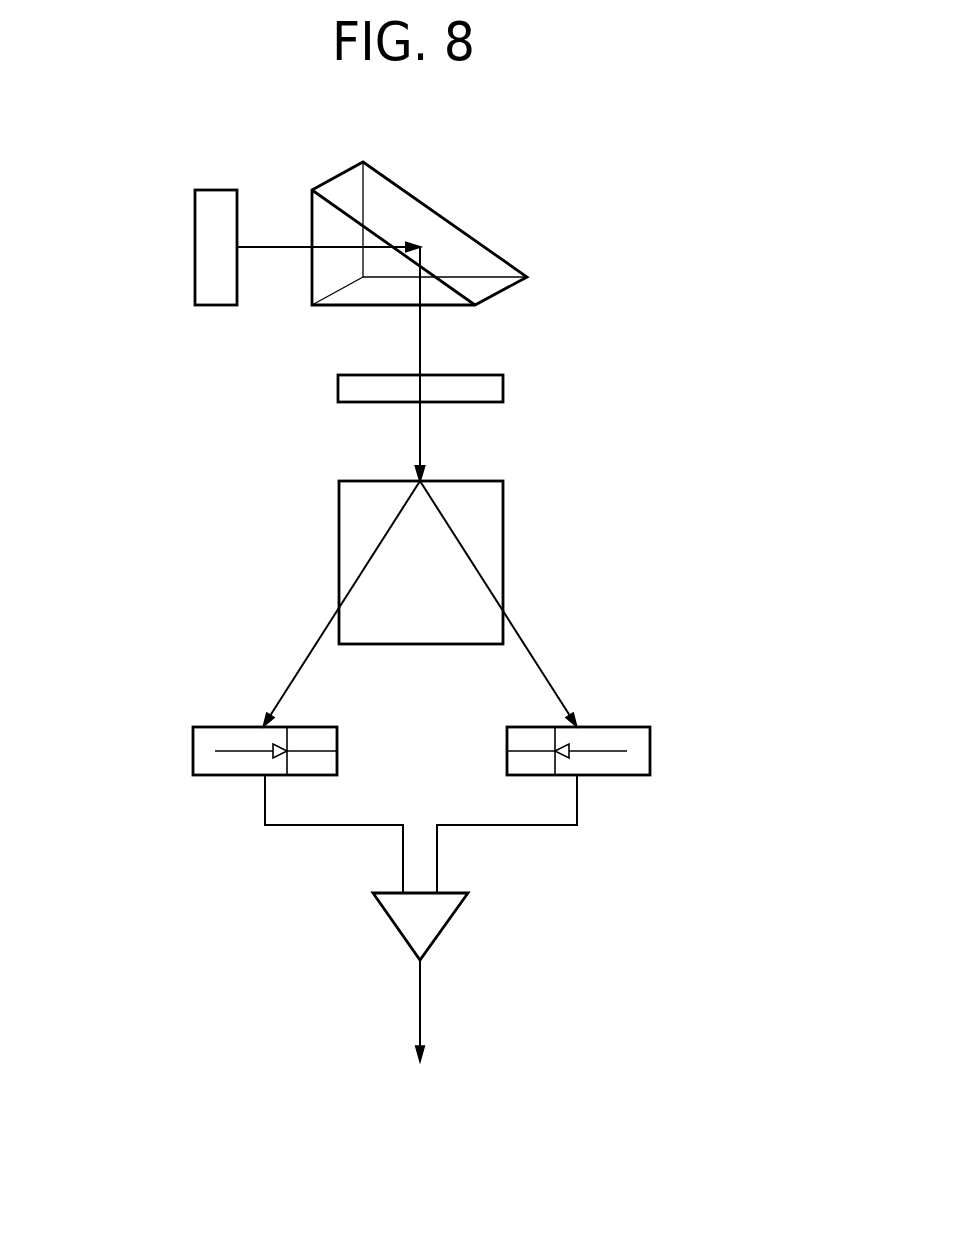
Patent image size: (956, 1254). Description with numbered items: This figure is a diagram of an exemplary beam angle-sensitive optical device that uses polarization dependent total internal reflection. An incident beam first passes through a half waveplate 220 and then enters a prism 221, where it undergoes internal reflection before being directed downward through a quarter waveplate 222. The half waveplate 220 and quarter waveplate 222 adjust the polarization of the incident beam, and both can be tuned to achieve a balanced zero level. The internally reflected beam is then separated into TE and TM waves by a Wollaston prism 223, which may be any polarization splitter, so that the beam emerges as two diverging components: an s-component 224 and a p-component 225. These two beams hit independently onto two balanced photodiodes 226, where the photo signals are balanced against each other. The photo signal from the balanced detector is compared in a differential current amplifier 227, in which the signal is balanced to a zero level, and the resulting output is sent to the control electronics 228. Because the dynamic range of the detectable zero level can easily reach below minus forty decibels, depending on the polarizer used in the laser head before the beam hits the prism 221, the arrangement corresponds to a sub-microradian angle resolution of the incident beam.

The half waveplate 220 is at (195, 238).
The prism 221 is at (433, 210).
The quarter waveplate 222 is at (503, 392).
The Wollaston prism 223 is at (339, 528).
The s-component 224 is at (542, 672).
The p-component 225 is at (303, 662).
The balanced photodiodes 226 is at (337, 775).
The differential current amplifier 227 is at (447, 928).
The control electronics 228 is at (420, 1007).